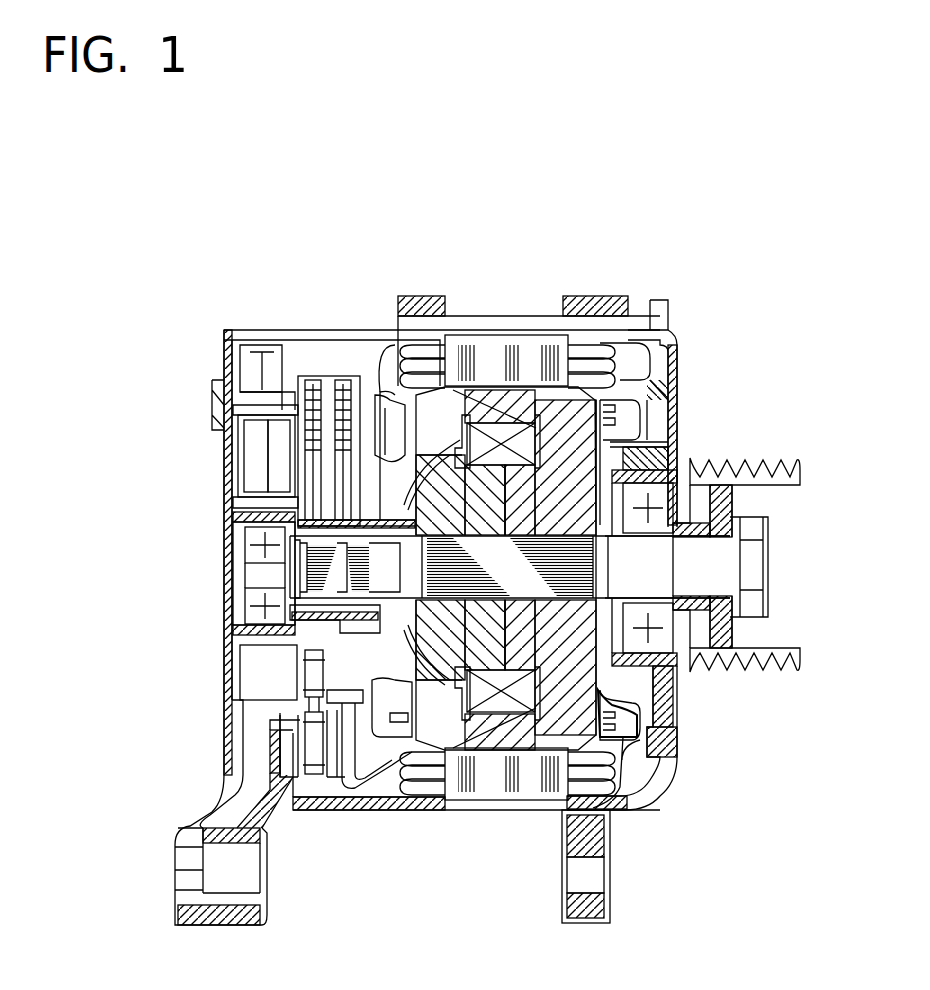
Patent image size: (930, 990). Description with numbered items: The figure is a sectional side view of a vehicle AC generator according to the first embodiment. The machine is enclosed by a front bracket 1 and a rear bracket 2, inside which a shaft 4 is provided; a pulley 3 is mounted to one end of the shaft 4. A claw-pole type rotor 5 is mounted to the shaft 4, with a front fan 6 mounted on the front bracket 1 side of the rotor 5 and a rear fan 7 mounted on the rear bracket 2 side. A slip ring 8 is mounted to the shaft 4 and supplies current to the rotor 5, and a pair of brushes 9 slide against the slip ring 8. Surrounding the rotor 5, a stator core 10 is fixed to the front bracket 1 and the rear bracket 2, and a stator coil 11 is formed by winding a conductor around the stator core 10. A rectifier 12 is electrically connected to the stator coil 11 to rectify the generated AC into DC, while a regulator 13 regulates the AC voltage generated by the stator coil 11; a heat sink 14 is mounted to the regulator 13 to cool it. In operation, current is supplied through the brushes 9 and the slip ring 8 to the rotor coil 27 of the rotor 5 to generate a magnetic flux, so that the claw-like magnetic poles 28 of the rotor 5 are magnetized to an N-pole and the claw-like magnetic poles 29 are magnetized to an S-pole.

The front bracket 1 is at (607, 300).
The rear bracket 2 is at (427, 300).
The pulley 3 is at (766, 460).
The shaft 4 is at (690, 574).
The claw-pole type rotor 5 is at (530, 732).
The front fan 6 is at (627, 728).
The rear fan 7 is at (388, 712).
The slip ring 8 is at (306, 623).
The brushes 9 is at (337, 378).
The stator core 10 is at (495, 345).
The stator coil 11 is at (432, 784).
The rectifier 12 is at (295, 668).
The regulator 13 is at (282, 436).
The heat sink 14 is at (245, 449).
The rotor coil 27 is at (506, 703).
The claw-like magnetic poles 28 is at (622, 372).
The claw-like magnetic poles 29 is at (446, 400).